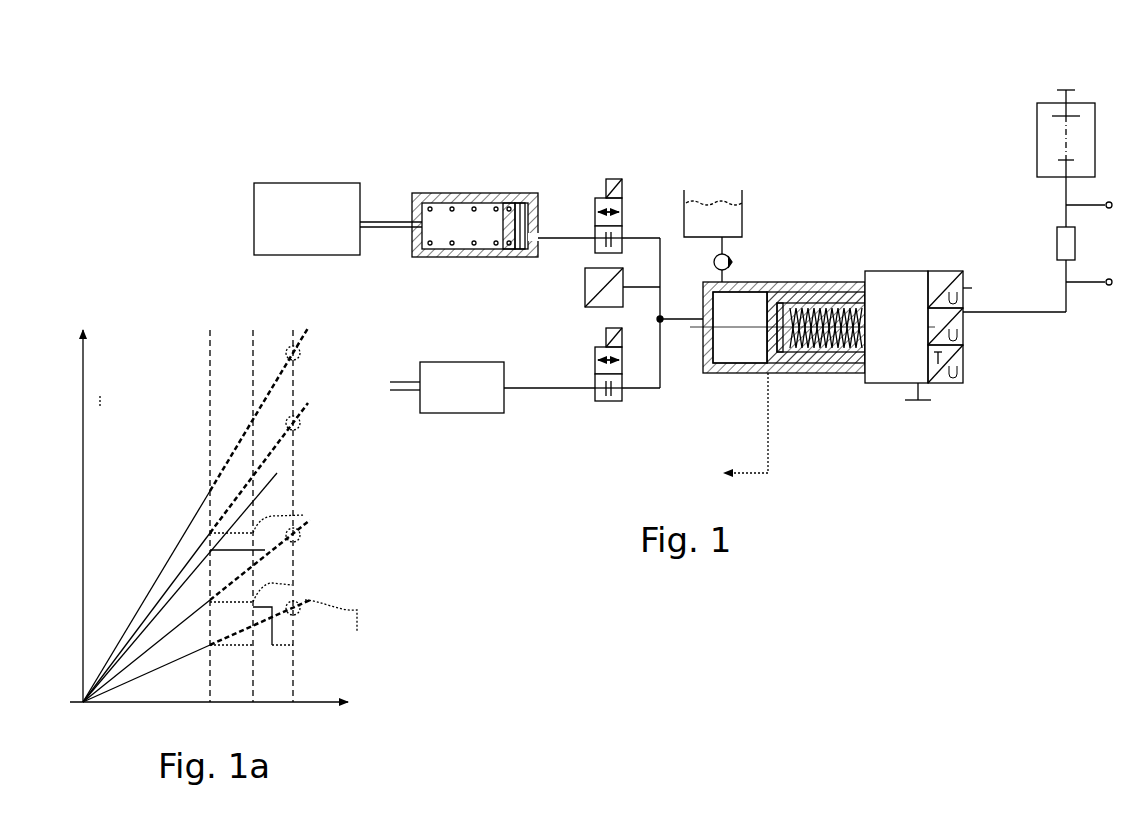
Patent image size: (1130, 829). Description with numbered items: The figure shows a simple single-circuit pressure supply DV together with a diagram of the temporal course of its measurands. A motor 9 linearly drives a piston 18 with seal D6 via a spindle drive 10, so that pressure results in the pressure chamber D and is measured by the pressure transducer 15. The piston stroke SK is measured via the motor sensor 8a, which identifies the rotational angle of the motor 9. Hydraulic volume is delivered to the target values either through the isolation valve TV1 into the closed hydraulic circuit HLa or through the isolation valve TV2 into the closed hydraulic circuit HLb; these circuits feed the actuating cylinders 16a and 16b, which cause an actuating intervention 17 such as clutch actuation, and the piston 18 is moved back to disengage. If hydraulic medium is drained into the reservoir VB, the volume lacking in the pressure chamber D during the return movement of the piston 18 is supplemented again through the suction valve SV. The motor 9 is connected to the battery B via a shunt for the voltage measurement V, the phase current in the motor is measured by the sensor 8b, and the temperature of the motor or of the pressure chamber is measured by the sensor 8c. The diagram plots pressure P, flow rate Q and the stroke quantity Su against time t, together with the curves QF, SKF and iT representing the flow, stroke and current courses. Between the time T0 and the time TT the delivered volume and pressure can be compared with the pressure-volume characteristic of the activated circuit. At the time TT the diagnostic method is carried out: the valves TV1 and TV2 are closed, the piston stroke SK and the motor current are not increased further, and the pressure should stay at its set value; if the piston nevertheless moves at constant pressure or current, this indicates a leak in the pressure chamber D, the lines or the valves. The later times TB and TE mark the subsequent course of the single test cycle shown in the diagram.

In FIG. 1, the actuating intervention 17 is at (307, 183).
In FIG. 1, the positioning cylinder 16a is at (432, 195).
In FIG. 1, the actuating cylinder 16b is at (460, 413).
In FIG. 1, the seal D6 is at (508, 203).
In FIG. 1, the battery B is at (526, 203).
In FIG. 1, the hydraulic circuit HLa is at (570, 238).
In FIG. 1, the hydraulic circuit HLb is at (553, 388).
In FIG. 1, the isolation valve TV1 is at (615, 200).
In FIG. 1, the isolation valve TV2 is at (608, 401).
In FIG. 1, the pressure transducer 15 is at (585, 292).
In FIG. 1, the reservoir VB is at (712, 206).
In FIG. 1, the suction valve SV is at (733, 262).
In FIG. 1, the pressure chamber D is at (726, 363).
In FIG. 1, the spindle drive 10 is at (846, 352).
In FIG. 1, the piston 18 is at (812, 352).
In FIG. 1, the pressure supply DV is at (930, 265).
In FIG. 1, the motor 9 is at (898, 376).
In FIG. 1, the motor sensor 8a is at (972, 288).
In FIG. 1, the motor current sensor 8b is at (963, 327).
In FIG. 1, the temperature sensor 8c is at (963, 365).
In FIG. 1, the voltage V is at (1085, 243).
In FIG. 1, the piston stroke SK is at (746, 438).
In FIG. 1A, the piston stroke SK is at (304, 516).
In FIG. 1A, the pressure P is at (102, 330).
In FIG. 1A, the flow rate Q is at (206, 494).
In FIG. 1A, the stroke axis Su is at (107, 388).
In FIG. 1A, the flow target QF is at (292, 468).
In FIG. 1A, the stroke target SKF is at (294, 586).
In FIG. 1A, the current iT is at (293, 650).
In FIG. 1A, the time T0 is at (81, 719).
In FIG. 1A, the time TT is at (209, 719).
In FIG. 1A, the time B TB is at (252, 719).
In FIG. 1A, the time E TE is at (291, 719).
In FIG. 1A, the time axis t is at (343, 717).